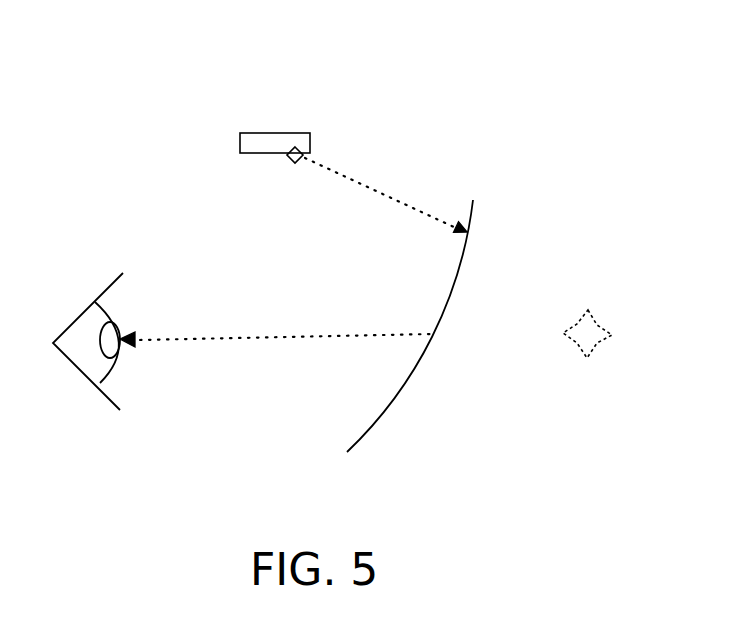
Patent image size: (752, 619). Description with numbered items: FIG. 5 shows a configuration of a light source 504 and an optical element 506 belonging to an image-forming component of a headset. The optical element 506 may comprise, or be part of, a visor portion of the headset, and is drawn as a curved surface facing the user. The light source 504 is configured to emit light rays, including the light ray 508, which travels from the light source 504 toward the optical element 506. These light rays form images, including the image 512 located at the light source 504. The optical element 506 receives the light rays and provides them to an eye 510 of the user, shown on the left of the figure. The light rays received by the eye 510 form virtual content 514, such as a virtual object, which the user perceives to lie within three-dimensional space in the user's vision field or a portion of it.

The light source 504 is at (278, 134).
The optical element 506 is at (393, 408).
The light ray 508 is at (367, 188).
The eye 510 is at (112, 321).
The image 512 is at (293, 162).
The virtual content 514 is at (583, 322).